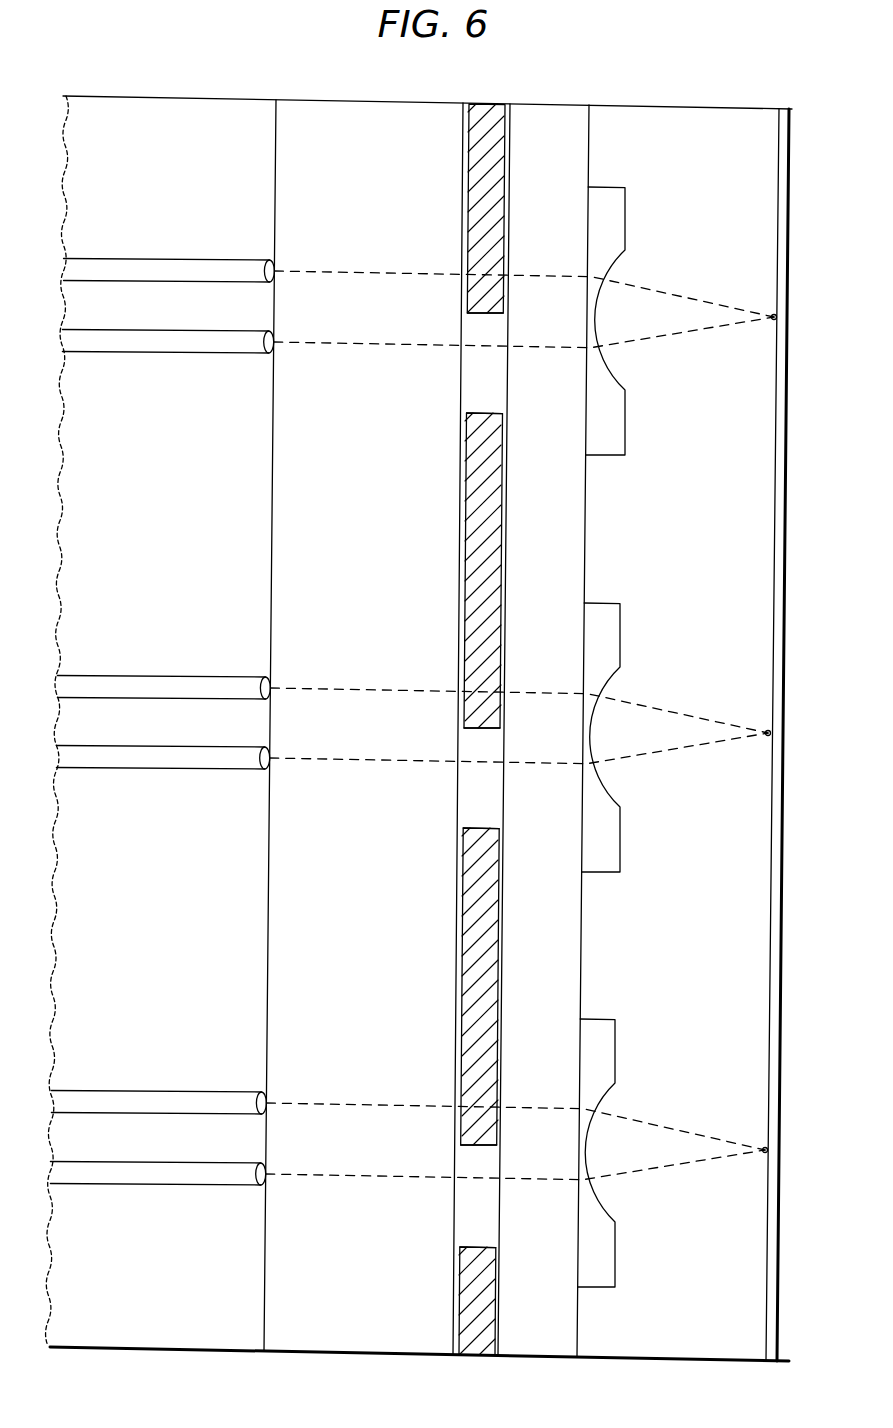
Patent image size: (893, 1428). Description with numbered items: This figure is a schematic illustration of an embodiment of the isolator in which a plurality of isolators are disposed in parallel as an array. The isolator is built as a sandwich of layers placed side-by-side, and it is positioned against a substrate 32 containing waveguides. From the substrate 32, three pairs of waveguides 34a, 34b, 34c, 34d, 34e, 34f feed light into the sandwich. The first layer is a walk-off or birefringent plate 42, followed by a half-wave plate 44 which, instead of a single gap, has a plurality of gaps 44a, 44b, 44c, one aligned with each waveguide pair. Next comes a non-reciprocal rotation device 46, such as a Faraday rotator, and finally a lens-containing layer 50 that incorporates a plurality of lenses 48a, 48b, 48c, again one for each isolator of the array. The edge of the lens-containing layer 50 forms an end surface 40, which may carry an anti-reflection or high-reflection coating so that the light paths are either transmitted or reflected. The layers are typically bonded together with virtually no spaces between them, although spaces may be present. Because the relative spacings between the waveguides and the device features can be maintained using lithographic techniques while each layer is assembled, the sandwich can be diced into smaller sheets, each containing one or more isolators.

The substrate 32 is at (163, 108).
The waveguide 34a is at (123, 268).
The waveguide 34b is at (123, 345).
The waveguide 34c is at (119, 682).
The waveguide 34d is at (118, 762).
The waveguide 34e is at (113, 1098).
The waveguide 34f is at (113, 1178).
The end surface 40 is at (783, 118).
The walk-off plate 42 is at (361, 110).
The half-wave plate 44 is at (483, 112).
The gap 44a is at (470, 397).
The gap 44b is at (466, 813).
The gap 44c is at (462, 1229).
The non-reciprocal rotation device 46 is at (547, 113).
The lens 48a is at (618, 207).
The lens 48b is at (612, 641).
The lens 48c is at (607, 1054).
The lens-containing layer 50 is at (683, 117).